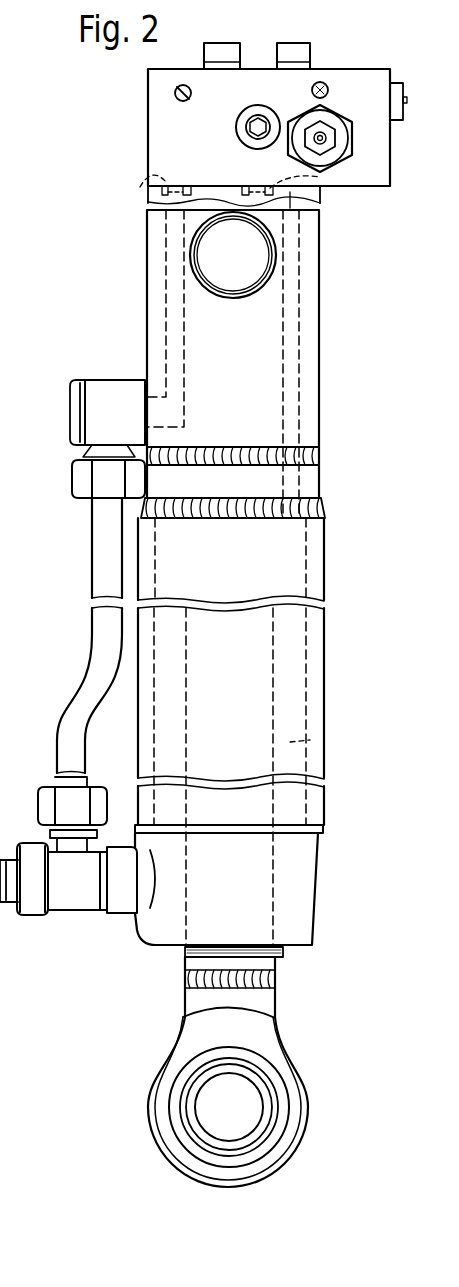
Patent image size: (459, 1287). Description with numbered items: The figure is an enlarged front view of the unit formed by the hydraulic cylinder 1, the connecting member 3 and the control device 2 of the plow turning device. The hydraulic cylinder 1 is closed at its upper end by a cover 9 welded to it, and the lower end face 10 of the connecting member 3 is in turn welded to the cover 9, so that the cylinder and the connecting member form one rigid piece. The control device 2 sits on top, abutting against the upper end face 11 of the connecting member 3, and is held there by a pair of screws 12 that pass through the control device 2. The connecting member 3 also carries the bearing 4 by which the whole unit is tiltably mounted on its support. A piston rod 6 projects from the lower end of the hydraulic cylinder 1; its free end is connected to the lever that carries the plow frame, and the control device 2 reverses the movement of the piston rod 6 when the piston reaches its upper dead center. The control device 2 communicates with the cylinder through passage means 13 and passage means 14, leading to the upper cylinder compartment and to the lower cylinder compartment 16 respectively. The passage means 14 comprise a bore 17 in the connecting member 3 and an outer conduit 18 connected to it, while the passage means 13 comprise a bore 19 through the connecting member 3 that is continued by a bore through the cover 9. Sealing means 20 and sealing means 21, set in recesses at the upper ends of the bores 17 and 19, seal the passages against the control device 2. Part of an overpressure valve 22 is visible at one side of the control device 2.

The hydraulic cylinder 1 is at (310, 700).
The control device 2 is at (188, 140).
The connecting member 3 is at (262, 365).
The bearing 4 is at (255, 257).
The piston rod 6 is at (197, 1003).
The cover 9 is at (268, 483).
The lower end face 10 is at (252, 450).
The upper end face 11 is at (296, 208).
The screws 12 is at (221, 47).
The passage means 13 is at (298, 333).
The passage means 14 is at (110, 366).
The lower cylinder compartment 16 is at (290, 742).
The bore 17 is at (170, 282).
The outer conduit 18 is at (103, 552).
The bore 19 is at (293, 287).
The sealing means 20 is at (140, 174).
The sealing means 21 is at (320, 177).
The overpressure valve 22 is at (398, 82).